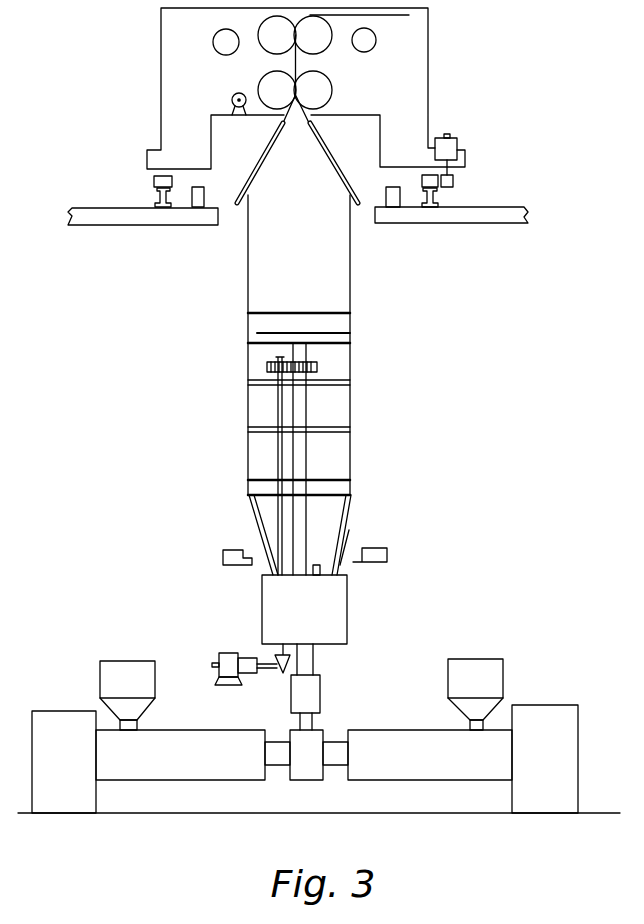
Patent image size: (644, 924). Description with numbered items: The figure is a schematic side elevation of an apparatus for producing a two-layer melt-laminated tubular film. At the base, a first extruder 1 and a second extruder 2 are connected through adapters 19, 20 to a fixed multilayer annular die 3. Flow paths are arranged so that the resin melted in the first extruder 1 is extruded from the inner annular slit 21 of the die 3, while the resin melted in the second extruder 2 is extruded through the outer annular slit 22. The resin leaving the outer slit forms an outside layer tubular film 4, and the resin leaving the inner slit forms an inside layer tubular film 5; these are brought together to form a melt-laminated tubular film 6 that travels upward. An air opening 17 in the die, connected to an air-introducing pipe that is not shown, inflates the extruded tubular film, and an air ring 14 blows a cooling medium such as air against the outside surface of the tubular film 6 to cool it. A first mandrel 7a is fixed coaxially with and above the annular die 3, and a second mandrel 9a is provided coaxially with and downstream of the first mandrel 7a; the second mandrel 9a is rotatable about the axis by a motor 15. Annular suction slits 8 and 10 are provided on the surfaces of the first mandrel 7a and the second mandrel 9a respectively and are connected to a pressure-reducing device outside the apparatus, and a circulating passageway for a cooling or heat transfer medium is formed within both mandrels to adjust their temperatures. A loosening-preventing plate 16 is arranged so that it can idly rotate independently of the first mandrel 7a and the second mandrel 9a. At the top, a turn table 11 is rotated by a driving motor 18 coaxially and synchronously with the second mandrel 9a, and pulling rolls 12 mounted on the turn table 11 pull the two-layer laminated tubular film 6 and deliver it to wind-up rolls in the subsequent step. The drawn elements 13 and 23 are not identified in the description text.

The first extruder 1 is at (553, 705).
The second extruder 2 is at (48, 711).
The fixed multilayer annular die 3 is at (342, 630).
The outside layer tubular film 4 is at (255, 537).
The inside layer tubular film 5 is at (265, 525).
The melt-laminated tubular film 6 is at (248, 293).
The first mandrel 7a is at (352, 480).
The annular suction slit 8 is at (258, 490).
The second mandrel 9a is at (345, 322).
The annular suction slit 10 is at (257, 333).
The turn table 11 is at (162, 113).
The pulling rolls 12 is at (322, 78).
The feed block 13 is at (323, 683).
The air ring 14 is at (387, 560).
The motor 15 is at (227, 653).
The loosening-preventing plate 16 is at (351, 428).
The air opening 17 is at (322, 578).
The driving motor 18 is at (455, 143).
The adapter 19 is at (325, 729).
The adapter 20 is at (277, 740).
The inner annular slit 21 is at (327, 568).
The outer annular slit 22 is at (347, 562).
The carriage block 23 is at (207, 208).